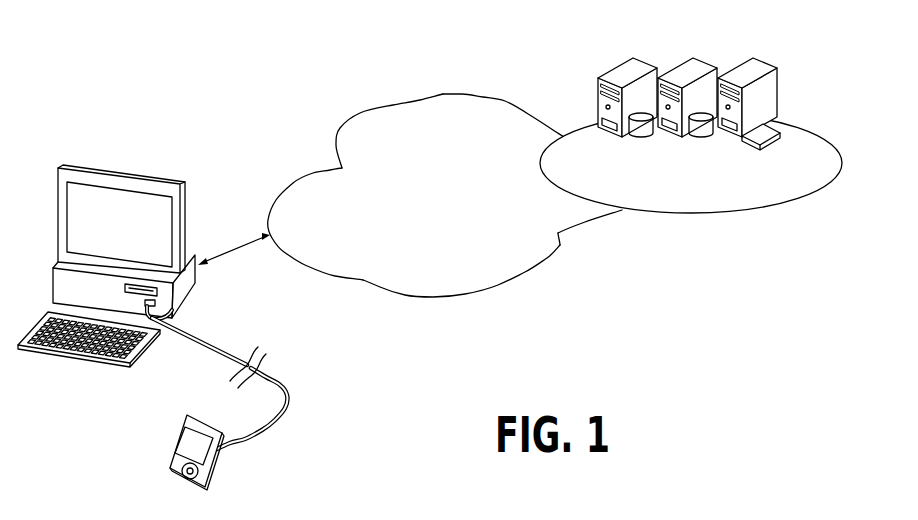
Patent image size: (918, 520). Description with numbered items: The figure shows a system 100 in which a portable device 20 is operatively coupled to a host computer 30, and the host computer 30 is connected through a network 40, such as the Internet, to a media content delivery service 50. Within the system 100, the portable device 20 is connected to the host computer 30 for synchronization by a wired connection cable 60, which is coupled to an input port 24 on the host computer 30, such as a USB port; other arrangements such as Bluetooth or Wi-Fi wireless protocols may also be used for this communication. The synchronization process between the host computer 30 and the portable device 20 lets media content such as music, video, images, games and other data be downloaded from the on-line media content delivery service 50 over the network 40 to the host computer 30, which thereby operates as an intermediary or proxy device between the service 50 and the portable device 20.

The system 100 is at (256, 85).
The portable device 20 is at (180, 424).
The input port 24 is at (183, 308).
The host computer 30 is at (117, 171).
The network 40 is at (447, 98).
The media content delivery service 50 is at (688, 215).
The wired connection cable 60 is at (289, 395).